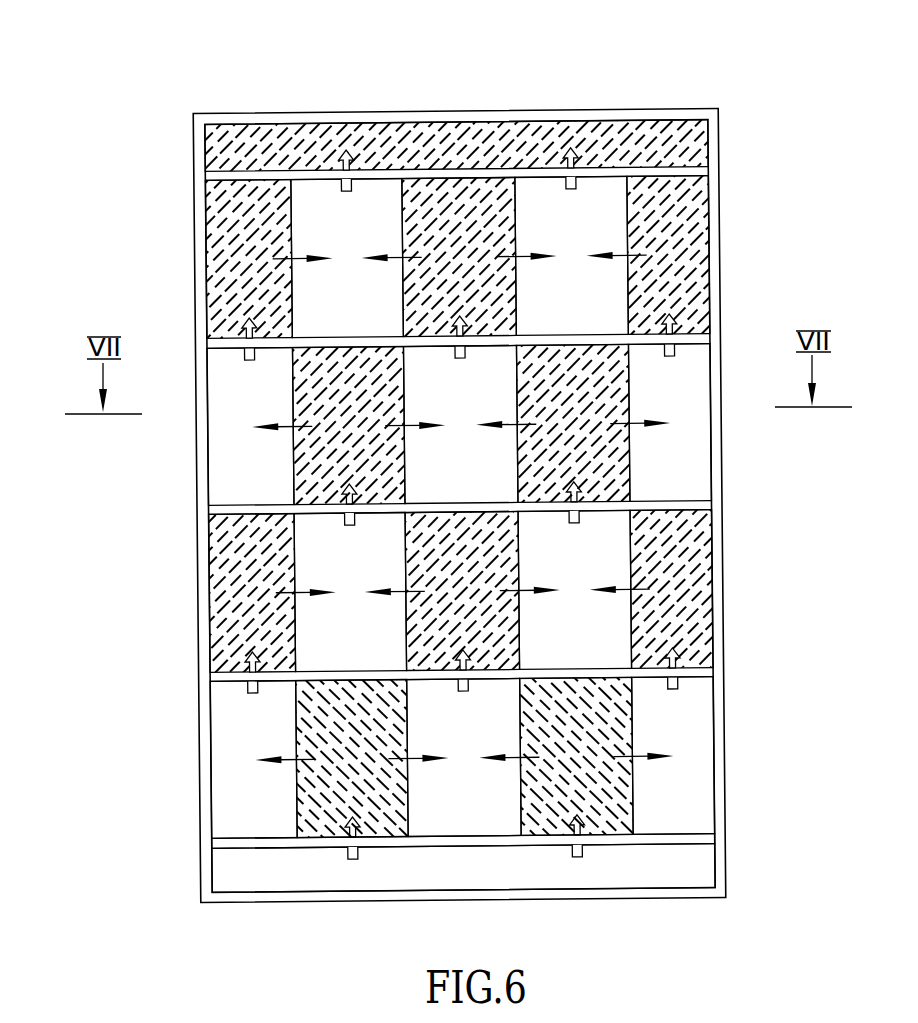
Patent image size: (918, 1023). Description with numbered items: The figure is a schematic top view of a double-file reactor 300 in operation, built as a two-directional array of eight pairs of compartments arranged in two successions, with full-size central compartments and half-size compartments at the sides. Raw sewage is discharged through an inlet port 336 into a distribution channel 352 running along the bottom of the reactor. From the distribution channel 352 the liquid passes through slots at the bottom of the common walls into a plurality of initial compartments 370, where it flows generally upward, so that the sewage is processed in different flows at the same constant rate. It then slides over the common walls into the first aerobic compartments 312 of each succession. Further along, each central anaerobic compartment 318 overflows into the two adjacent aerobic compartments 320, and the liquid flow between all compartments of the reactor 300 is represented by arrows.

The double-file reactor 300 is at (96, 124).
The anaerobic compartment 318 is at (300, 390).
The aerobic compartment 320 is at (275, 475).
The initial compartment 370 is at (330, 723).
The first aerobic compartment 312 is at (277, 813).
The inlet port 336 is at (237, 840).
The distribution channel 352 is at (408, 872).